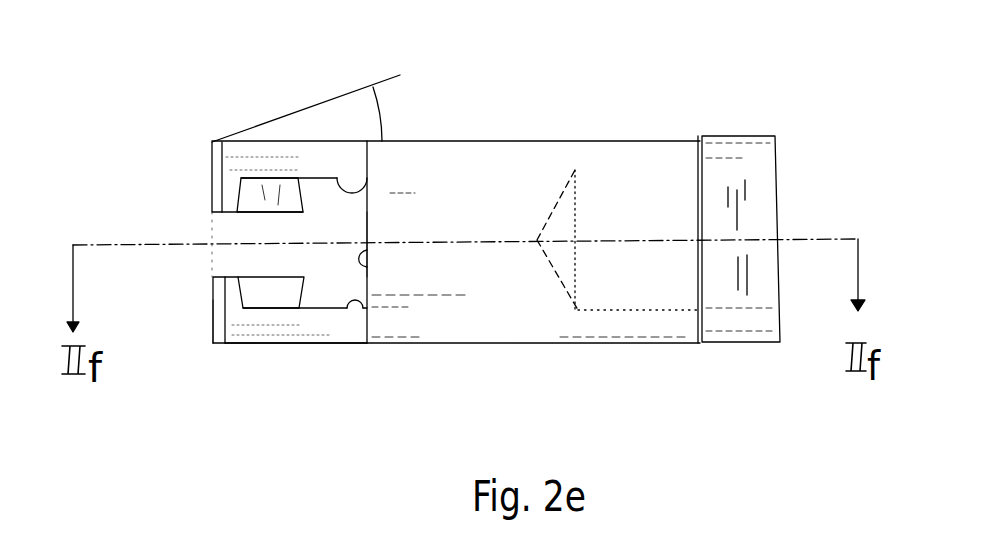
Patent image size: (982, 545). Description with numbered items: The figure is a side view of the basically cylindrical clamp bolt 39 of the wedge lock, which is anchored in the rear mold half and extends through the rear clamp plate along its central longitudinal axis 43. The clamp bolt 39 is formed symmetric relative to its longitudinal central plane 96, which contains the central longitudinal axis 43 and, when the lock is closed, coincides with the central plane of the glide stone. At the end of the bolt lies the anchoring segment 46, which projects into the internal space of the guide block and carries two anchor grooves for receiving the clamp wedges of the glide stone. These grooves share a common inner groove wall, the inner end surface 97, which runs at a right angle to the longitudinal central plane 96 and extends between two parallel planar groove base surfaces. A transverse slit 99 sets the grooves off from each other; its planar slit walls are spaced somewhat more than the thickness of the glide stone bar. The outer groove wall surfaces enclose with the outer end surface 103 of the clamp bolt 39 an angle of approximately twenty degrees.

The clamp bolt 39 is at (525, 166).
The central longitudinal axis 43 is at (828, 239).
The anchoring segment 46 is at (333, 332).
The longitudinal central plane 96 is at (190, 240).
The inner end surface 97 is at (367, 273).
The transverse slit 99 is at (224, 258).
The outer end surface 103 is at (212, 305).